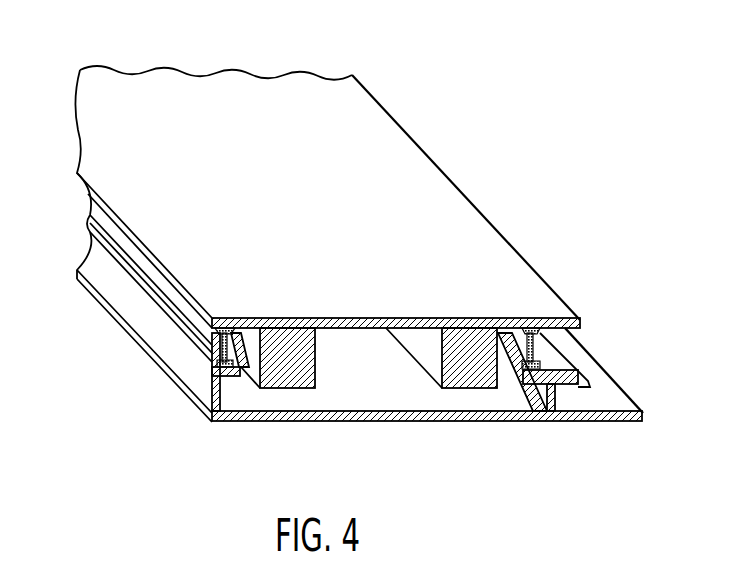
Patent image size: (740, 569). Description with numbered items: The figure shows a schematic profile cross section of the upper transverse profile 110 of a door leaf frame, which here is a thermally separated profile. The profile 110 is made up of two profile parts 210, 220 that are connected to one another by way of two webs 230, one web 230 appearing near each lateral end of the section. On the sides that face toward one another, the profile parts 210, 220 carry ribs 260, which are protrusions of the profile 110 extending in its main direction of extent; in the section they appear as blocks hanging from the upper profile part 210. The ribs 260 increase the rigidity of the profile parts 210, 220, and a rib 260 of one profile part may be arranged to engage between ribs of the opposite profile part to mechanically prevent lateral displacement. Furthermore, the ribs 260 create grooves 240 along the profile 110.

The upper transverse profile 110 is at (431, 81).
The profile part 210 is at (507, 240).
The profile part 220 is at (628, 422).
The web 230 is at (212, 349).
The groove 240 is at (233, 143).
The rib 260 is at (288, 380).